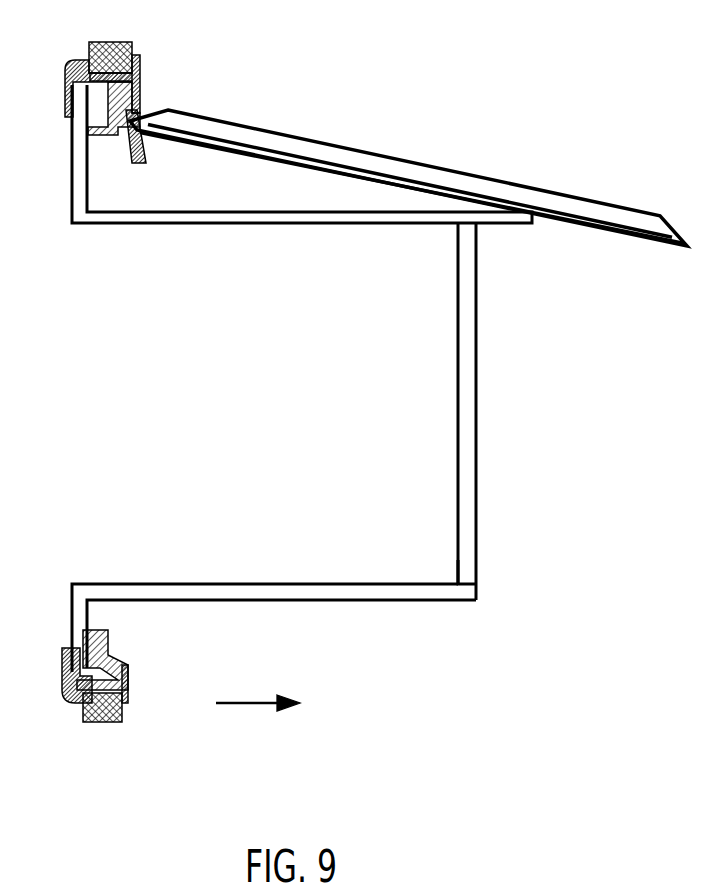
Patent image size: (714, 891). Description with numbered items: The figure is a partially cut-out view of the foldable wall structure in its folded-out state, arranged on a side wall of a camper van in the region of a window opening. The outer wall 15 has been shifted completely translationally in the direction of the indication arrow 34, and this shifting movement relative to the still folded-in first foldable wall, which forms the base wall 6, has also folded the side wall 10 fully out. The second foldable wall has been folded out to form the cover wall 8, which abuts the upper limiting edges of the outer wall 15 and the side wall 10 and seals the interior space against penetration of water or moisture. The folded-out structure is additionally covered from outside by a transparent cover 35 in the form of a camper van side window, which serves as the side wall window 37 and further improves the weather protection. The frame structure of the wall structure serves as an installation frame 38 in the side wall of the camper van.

The base wall 6 is at (310, 379).
The cover wall 8 is at (187, 218).
The side wall 10 is at (442, 576).
The outer wall 15 is at (477, 478).
The indication arrow 34 is at (252, 704).
The transparent cover 35 is at (577, 202).
The side wall window 37 is at (105, 102).
The installation frame 38 is at (73, 610).